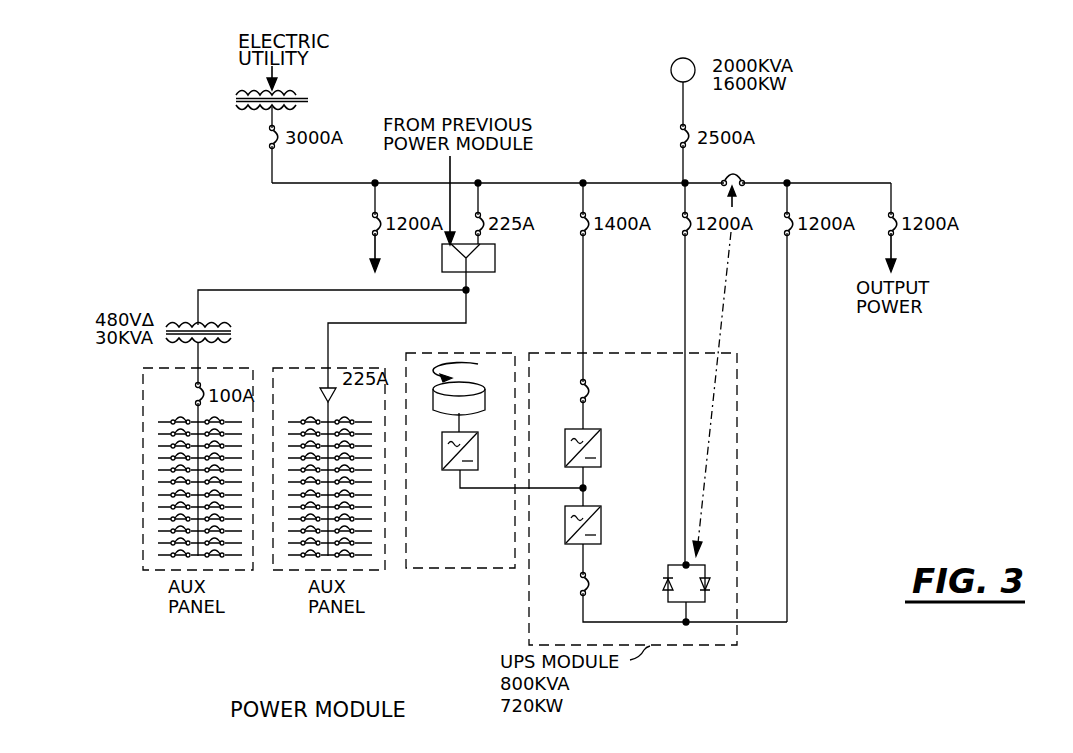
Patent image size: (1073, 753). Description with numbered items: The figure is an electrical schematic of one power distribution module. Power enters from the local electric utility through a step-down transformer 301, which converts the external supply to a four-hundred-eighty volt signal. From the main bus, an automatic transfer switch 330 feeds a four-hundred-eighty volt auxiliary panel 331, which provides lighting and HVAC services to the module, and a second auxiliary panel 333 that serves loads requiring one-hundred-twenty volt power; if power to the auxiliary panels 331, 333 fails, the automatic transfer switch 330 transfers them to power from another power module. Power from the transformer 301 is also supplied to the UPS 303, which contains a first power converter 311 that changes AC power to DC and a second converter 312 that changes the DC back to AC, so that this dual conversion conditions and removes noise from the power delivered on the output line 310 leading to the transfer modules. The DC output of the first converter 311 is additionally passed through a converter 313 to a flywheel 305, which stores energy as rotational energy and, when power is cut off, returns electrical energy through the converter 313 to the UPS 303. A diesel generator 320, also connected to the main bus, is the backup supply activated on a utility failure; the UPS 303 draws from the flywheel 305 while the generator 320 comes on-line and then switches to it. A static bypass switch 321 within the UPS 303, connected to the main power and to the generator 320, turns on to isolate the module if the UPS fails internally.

The step-down transformer 301 is at (233, 100).
The UPS 303 is at (658, 518).
The flywheel 305 is at (471, 442).
The output line 310 is at (898, 259).
The first power converter 311 is at (601, 437).
The second converter 312 is at (601, 522).
The converter 313 is at (452, 470).
The diesel generator 320 is at (665, 72).
The static bypass switch 321 is at (668, 570).
The automatic transfer switch 330 is at (495, 258).
The 480-volt auxiliary panel 331 is at (385, 572).
The 220/120 volt auxiliary panel 333 is at (143, 530).